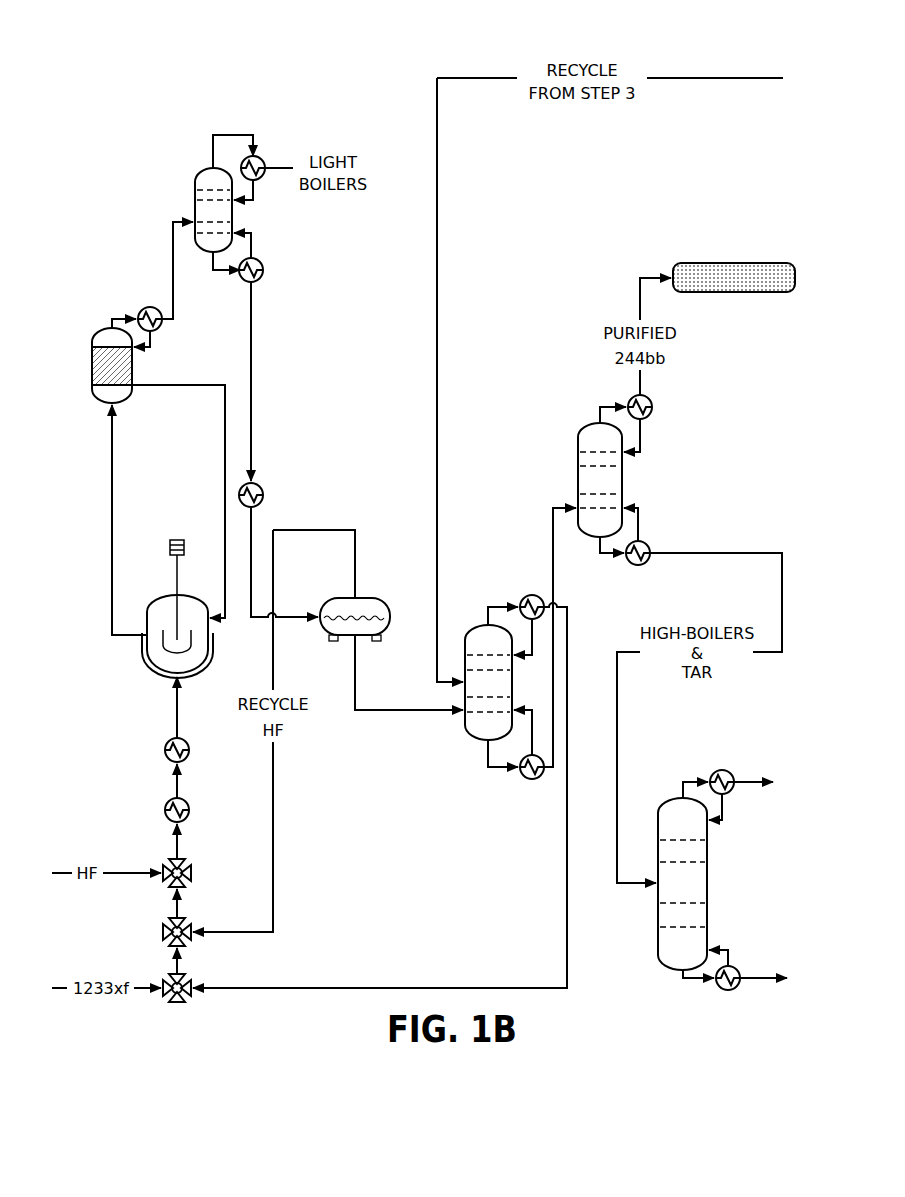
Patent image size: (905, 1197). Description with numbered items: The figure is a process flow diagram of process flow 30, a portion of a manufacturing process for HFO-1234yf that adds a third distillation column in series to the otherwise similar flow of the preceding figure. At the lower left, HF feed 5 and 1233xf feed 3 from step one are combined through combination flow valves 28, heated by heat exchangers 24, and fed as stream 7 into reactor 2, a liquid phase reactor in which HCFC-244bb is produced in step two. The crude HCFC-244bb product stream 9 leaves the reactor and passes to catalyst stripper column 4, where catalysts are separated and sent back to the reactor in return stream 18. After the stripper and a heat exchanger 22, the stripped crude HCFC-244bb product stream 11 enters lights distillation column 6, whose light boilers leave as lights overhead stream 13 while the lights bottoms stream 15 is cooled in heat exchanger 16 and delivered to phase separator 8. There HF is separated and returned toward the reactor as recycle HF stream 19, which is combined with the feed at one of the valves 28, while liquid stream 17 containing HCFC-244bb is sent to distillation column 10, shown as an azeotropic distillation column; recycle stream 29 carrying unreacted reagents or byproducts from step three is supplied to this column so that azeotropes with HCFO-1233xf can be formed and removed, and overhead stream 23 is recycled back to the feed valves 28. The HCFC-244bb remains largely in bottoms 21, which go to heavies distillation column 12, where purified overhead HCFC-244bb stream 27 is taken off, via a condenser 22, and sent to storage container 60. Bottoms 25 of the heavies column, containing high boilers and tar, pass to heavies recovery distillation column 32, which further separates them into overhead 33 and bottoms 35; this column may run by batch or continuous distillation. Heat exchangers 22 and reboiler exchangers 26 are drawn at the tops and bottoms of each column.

The process flow 30 is at (178, 74).
The reactor 2 is at (140, 666).
The 1233xf feed 3 is at (150, 990).
The catalyst stripper column 4 is at (90, 327).
The HF feed 5 is at (132, 875).
The lights distillation column 6 is at (186, 178).
The stream 7 is at (175, 722).
The phase separator 8 is at (322, 596).
The crude HCFC-244bb product stream 9 is at (112, 528).
The distillation column 10 is at (470, 622).
The stripped crude HCFC-244bb product stream 11 is at (172, 241).
The heavies distillation column 12 is at (576, 431).
The lights overhead stream 13 is at (398, 168).
The lights bottoms stream 15 is at (250, 348).
The heat exchanger 16 is at (262, 485).
The liquid stream 17 is at (355, 673).
The return stream 18 is at (225, 466).
The recycle HF stream 19 is at (273, 792).
The bottoms 21 is at (553, 538).
The heat exchanger 22 is at (258, 157).
The overhead stream 23 is at (567, 876).
The heat exchanger 24 is at (190, 751).
The bottoms 25 is at (685, 553).
The reboiler 26 is at (264, 276).
The purified overhead HCFC-244bb stream 27 is at (645, 277).
The combination flow valves 28 is at (192, 874).
The recycle stream 29 is at (717, 78).
The heavies recovery distillation column 32 is at (710, 874).
The overhead 33 is at (750, 781).
The bottoms 35 is at (760, 981).
The storage container 60 is at (715, 259).